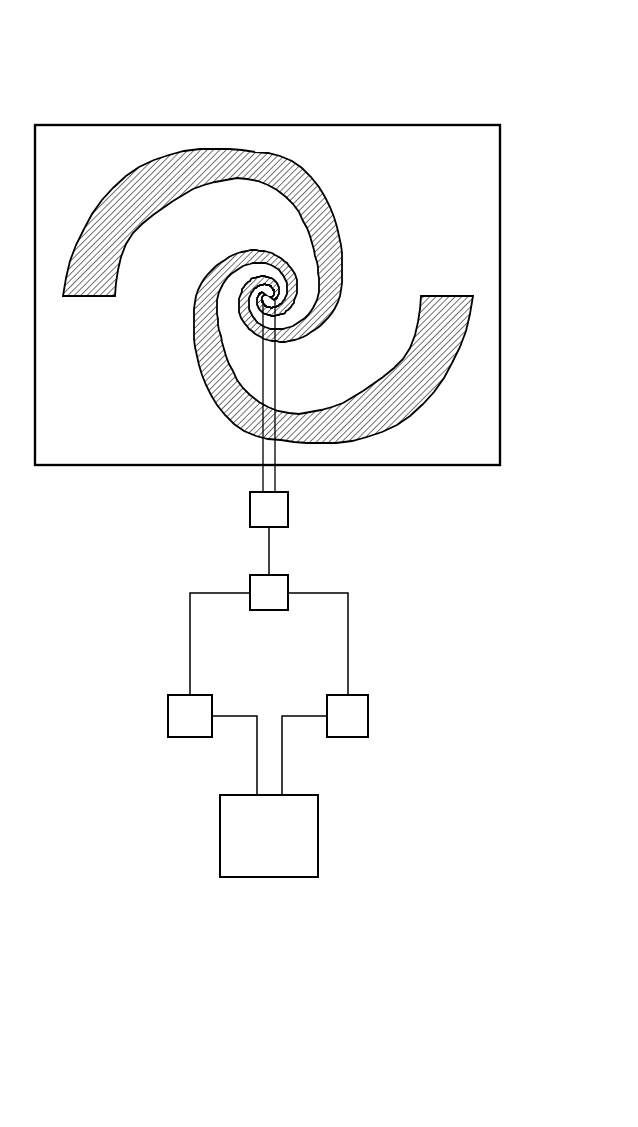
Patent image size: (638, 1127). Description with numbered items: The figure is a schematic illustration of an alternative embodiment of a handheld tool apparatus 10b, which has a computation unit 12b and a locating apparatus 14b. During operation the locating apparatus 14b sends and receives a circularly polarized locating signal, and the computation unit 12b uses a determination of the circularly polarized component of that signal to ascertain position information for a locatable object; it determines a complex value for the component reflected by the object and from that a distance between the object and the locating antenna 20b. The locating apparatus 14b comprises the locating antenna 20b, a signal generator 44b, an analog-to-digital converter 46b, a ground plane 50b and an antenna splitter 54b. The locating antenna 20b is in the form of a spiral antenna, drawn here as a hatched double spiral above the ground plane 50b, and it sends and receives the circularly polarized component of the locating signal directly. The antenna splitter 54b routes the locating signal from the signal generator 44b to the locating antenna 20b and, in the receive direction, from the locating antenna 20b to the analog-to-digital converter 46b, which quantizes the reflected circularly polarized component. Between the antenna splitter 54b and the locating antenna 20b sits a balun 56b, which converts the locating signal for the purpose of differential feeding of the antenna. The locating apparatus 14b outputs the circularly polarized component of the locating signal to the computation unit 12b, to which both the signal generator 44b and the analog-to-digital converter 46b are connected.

The handheld tool apparatus 10b is at (427, 70).
The locating apparatus 14b is at (496, 94).
The locating antenna 20b is at (228, 150).
The ground plane 50b is at (460, 415).
The balun 56b is at (288, 509).
The antenna splitter 54b is at (288, 590).
The signal generator 44b is at (168, 715).
The analog-to-digital converter 46b is at (368, 716).
The computation unit 12b is at (272, 877).